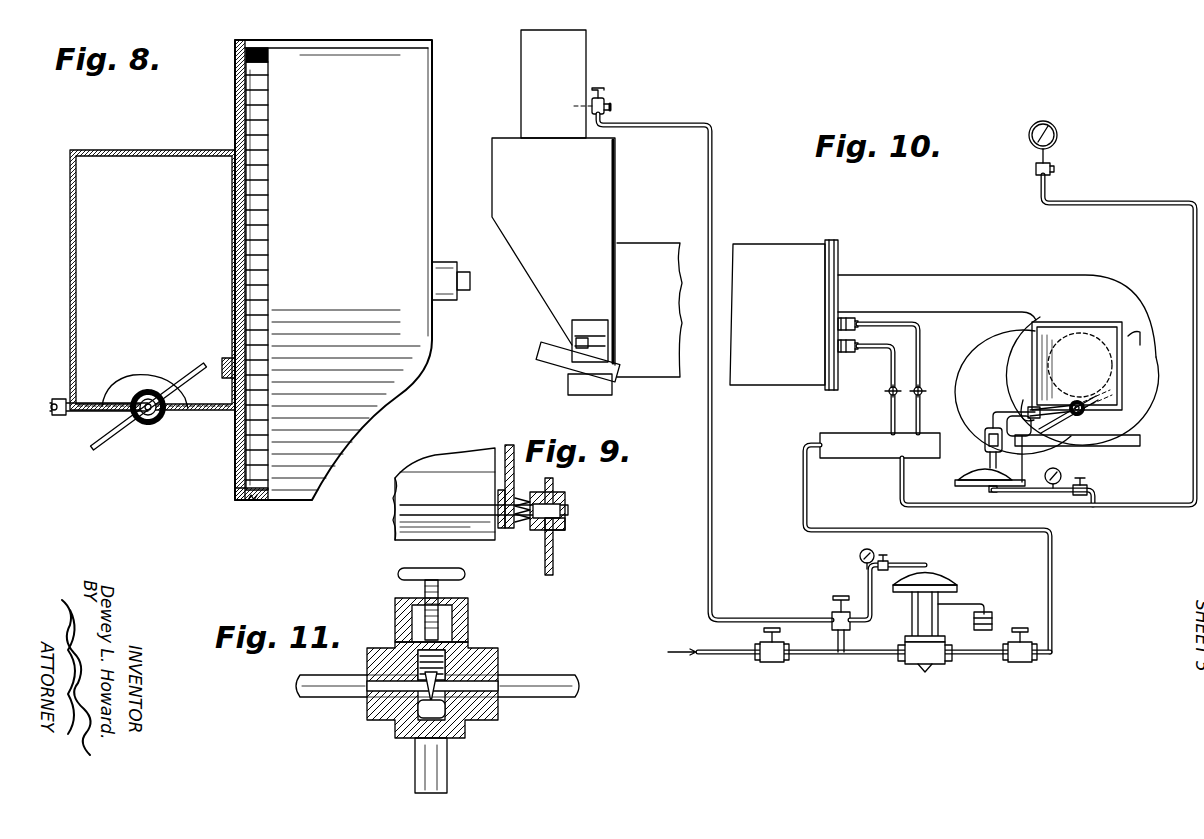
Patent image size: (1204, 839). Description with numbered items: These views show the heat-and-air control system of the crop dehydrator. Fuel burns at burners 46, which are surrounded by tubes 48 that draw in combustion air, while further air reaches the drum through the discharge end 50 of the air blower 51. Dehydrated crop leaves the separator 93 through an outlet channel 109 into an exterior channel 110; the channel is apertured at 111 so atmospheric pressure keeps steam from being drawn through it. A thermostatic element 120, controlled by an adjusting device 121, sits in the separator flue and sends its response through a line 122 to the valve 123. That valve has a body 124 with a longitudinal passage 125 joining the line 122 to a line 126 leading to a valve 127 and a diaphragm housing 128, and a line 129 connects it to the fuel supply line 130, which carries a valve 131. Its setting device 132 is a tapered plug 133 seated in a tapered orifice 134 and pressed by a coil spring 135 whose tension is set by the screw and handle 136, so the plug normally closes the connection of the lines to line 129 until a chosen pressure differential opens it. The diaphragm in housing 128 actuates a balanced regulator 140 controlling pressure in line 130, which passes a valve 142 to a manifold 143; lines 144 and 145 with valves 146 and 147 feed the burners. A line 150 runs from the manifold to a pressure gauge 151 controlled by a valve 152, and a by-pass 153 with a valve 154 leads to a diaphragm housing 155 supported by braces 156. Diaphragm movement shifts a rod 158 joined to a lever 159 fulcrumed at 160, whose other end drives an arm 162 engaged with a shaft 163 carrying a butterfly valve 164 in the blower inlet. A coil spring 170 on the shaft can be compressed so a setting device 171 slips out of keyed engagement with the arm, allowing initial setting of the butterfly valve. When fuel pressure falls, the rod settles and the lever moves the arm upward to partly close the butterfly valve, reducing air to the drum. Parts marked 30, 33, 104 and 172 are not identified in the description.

In FIG. 10, the combustion chamber casing 30 is at (797, 234).
In FIG. 10, the end plate 33 is at (850, 232).
In FIG. 10, the burners 46 is at (848, 352).
In FIG. 10, the tubes 48 is at (837, 327).
In FIG. 10, the discharge end 50 is at (843, 275).
In FIG. 8, the air blower 51 is at (430, 64).
In FIG. 10, the air blower 51 is at (1141, 275).
In FIG. 10, the separator 93 is at (616, 165).
In FIG. 10, the stack 104 is at (576, 50).
In FIG. 10, the outlet channel 109 is at (598, 320).
In FIG. 10, the channel 110 is at (556, 374).
In FIG. 10, the aperture 111 is at (578, 338).
In FIG. 10, the thermostatic element 120 is at (600, 94).
In FIG. 10, the adjusting device 121 is at (610, 110).
In FIG. 10, the line 122 is at (713, 148).
In FIG. 11, the line 122 is at (300, 698).
In FIG. 10, the valve 123 is at (832, 618).
In FIG. 11, the valve 123 is at (480, 652).
In FIG. 11, the body 124 is at (498, 722).
In FIG. 11, the longitudinal passage 125 is at (382, 660).
In FIG. 10, the line 126 is at (870, 605).
In FIG. 11, the line 126 is at (543, 680).
In FIG. 10, the valve 127 is at (886, 556).
In FIG. 10, the diaphragm housing 128 is at (940, 580).
In FIG. 10, the line 129 is at (838, 632).
In FIG. 11, the line 129 is at (447, 780).
In FIG. 10, the fuel supply line 130 is at (820, 657).
In FIG. 10, the valve 131 is at (775, 664).
In FIG. 11, the setting device 132 is at (440, 612).
In FIG. 11, the tapered plug 133 is at (412, 698).
In FIG. 11, the tapered orifice 134 is at (420, 736).
In FIG. 11, the coil spring 135 is at (402, 630).
In FIG. 10, the screw and handle 136 is at (848, 584).
In FIG. 11, the screw and handle 136 is at (462, 568).
In FIG. 10, the balanced regulator 140 is at (938, 612).
In FIG. 10, the valve 142 is at (1015, 665).
In FIG. 10, the manifold 143 is at (833, 448).
In FIG. 10, the line 144 is at (890, 422).
In FIG. 10, the line 145 is at (920, 415).
In FIG. 10, the valve 146 is at (888, 395).
In FIG. 10, the valve 147 is at (918, 384).
In FIG. 10, the line 150 is at (905, 490).
In FIG. 10, the pressure gauge 151 is at (1057, 137).
In FIG. 10, the valve 152 is at (1033, 170).
In FIG. 10, the by-pass 153 is at (1093, 500).
In FIG. 10, the valve 154 is at (1084, 480).
In FIG. 10, the diaphragm housing 155 is at (968, 487).
In FIG. 10, the braces 156 is at (1022, 455).
In FIG. 10, the rod 158 is at (985, 438).
In FIG. 10, the lever 159 is at (996, 404).
In FIG. 10, the fulcrum 160 is at (1018, 410).
In FIG. 8, the arm 162 is at (78, 422).
In FIG. 10, the arm 162 is at (1030, 400).
In FIG. 9, the arm 162 is at (553, 556).
In FIG. 8, the shaft 163 is at (149, 423).
In FIG. 10, the shaft 163 is at (1094, 376).
In FIG. 9, the shaft 163 is at (478, 478).
In FIG. 8, the butterfly valve 164 is at (98, 450).
In FIG. 10, the butterfly valve 164 is at (1080, 440).
In FIG. 9, the butterfly valve 164 is at (448, 478).
In FIG. 9, the coil spring 170 is at (530, 493).
In FIG. 8, the setting device 171 is at (145, 427).
In FIG. 10, the setting device 171 is at (1088, 415).
In FIG. 9, the setting device 171 is at (544, 530).
In FIG. 8, the grate 172 is at (236, 308).
In FIG. 10, the grate 172 is at (1140, 332).